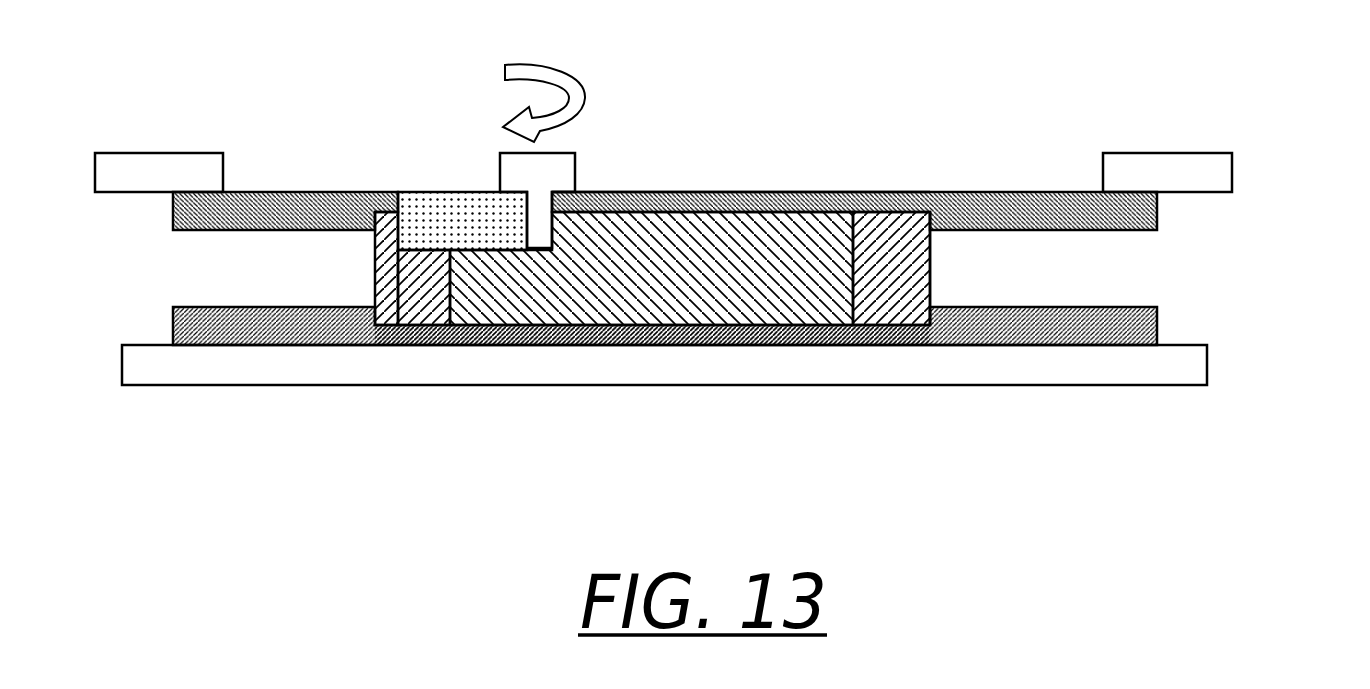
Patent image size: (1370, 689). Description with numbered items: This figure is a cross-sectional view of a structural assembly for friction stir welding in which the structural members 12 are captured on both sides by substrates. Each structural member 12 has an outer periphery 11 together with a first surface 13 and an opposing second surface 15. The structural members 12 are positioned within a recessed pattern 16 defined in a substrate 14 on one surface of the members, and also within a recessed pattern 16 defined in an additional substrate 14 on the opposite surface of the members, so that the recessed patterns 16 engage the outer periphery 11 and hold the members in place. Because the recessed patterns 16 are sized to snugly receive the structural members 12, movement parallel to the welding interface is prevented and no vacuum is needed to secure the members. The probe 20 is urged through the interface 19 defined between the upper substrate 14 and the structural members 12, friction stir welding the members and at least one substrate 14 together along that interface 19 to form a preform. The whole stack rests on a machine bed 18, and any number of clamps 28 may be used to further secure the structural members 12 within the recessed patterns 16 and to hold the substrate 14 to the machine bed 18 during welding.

The outer periphery 11 is at (933, 270).
The structural member 12 is at (472, 418).
The first surface 13 is at (748, 207).
The substrate 14 is at (1000, 192).
The second surface 15 is at (768, 333).
The recessed pattern 16 is at (365, 195).
The machine bed 18 is at (1180, 365).
The interface 19 is at (655, 200).
The probe 20 is at (499, 153).
The clamp 28 is at (157, 152).